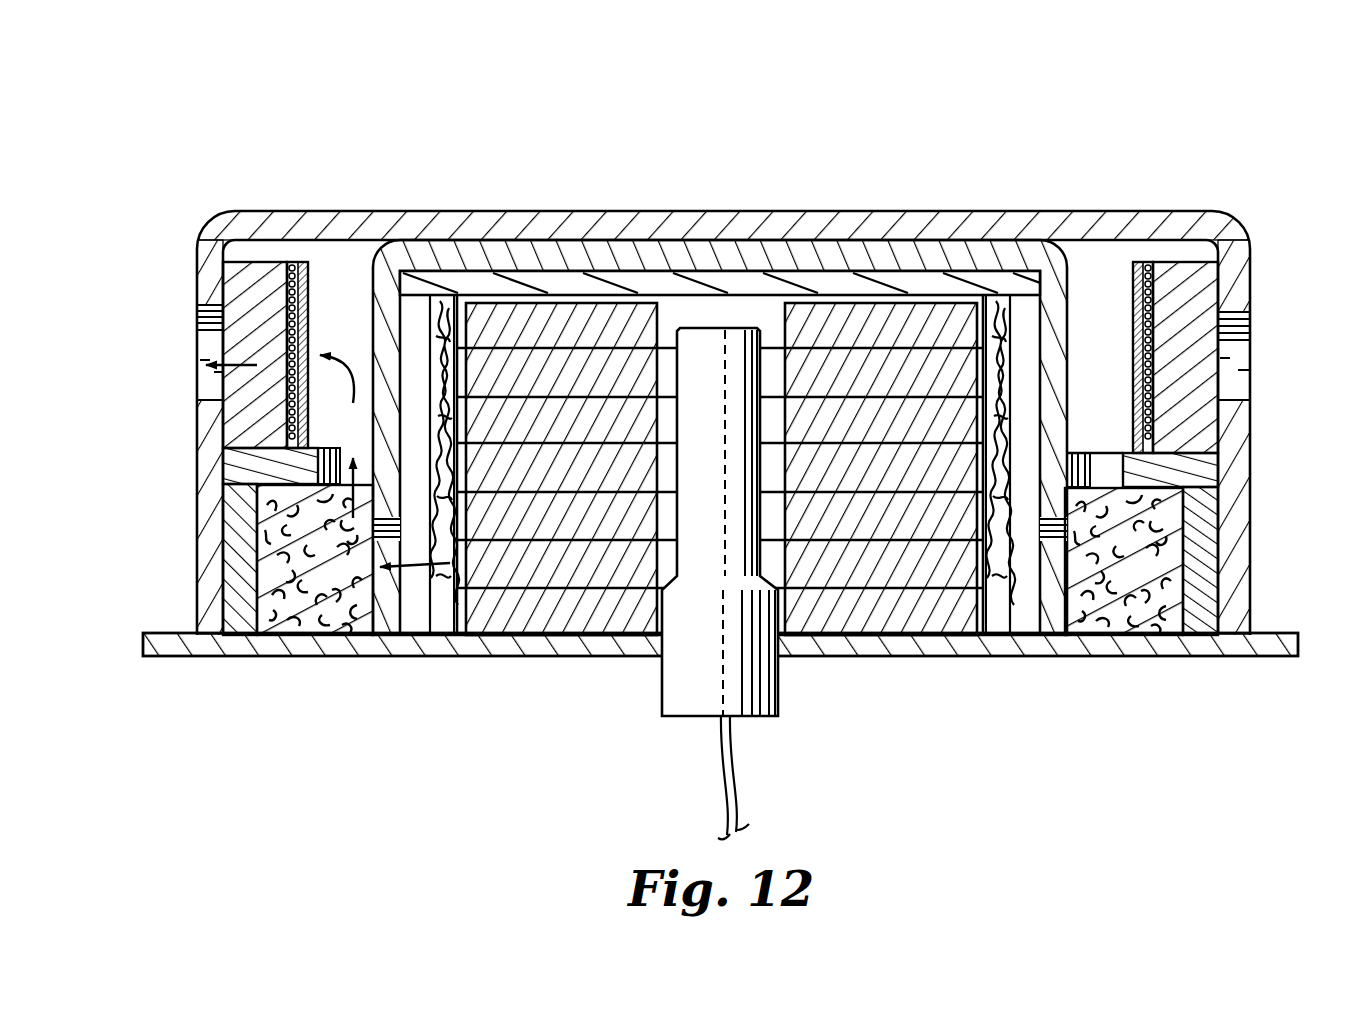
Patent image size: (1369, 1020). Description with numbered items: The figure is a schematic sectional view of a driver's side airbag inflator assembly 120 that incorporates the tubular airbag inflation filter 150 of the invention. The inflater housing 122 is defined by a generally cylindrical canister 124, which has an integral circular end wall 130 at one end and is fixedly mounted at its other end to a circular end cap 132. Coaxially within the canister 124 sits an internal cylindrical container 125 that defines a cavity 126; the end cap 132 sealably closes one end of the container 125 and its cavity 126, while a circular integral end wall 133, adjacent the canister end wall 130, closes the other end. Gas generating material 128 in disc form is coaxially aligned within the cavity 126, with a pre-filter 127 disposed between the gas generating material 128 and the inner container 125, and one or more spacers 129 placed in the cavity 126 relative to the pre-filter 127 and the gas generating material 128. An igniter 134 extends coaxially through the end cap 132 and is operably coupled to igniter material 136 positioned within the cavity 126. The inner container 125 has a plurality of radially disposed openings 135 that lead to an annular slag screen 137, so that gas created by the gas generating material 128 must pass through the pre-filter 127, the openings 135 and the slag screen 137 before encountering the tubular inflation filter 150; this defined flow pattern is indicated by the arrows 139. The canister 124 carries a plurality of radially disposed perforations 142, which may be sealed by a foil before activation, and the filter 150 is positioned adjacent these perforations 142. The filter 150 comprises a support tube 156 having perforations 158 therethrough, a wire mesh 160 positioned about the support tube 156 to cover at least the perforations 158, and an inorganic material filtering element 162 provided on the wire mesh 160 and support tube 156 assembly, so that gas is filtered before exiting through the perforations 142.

The airbag inflator assembly 120 is at (1215, 90).
The inflater housing 122 is at (1258, 240).
The cylindrical canister 124 is at (1236, 448).
The internal cylindrical container 125 is at (1000, 250).
The cavity 126 is at (912, 292).
The pre-filter 127 is at (421, 243).
The gas generating material 128 is at (563, 530).
The spacer 129 is at (641, 272).
The circular end wall 130 is at (848, 230).
The end cap 132 is at (842, 648).
The circular integral end wall 133 is at (778, 250).
The igniter 134 is at (690, 693).
The radially disposed openings 135 is at (1052, 615).
The igniter material 136 is at (710, 340).
The annular slag screen 137 is at (293, 636).
The arrows 139 is at (262, 370).
The perforations 142 is at (202, 333).
The tubular airbag inflation filter 150 is at (1205, 262).
The support tube 156 is at (1144, 266).
The perforations 158 is at (1140, 362).
The wire mesh 160 is at (1168, 270).
The inorganic material filtering element 162 is at (1222, 292).